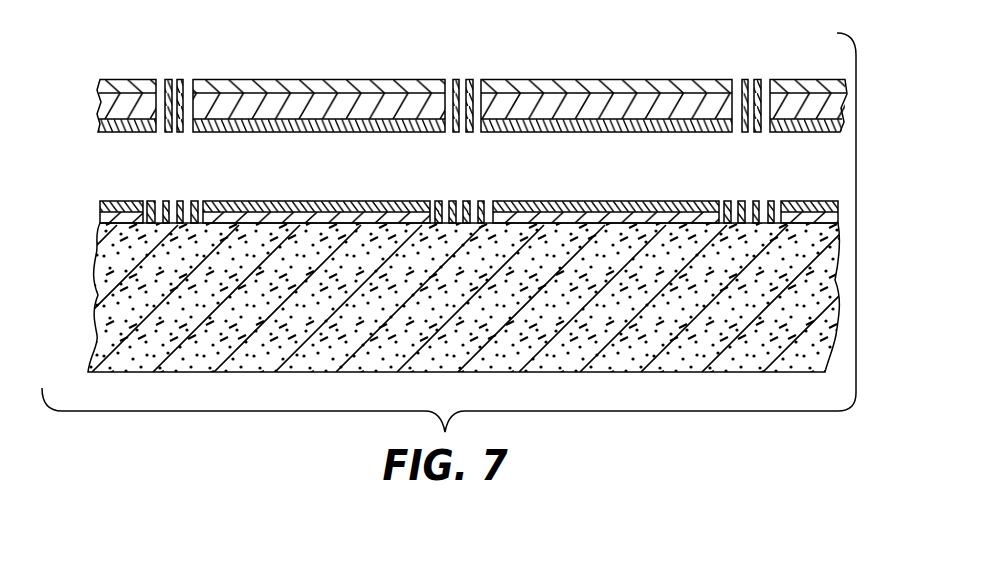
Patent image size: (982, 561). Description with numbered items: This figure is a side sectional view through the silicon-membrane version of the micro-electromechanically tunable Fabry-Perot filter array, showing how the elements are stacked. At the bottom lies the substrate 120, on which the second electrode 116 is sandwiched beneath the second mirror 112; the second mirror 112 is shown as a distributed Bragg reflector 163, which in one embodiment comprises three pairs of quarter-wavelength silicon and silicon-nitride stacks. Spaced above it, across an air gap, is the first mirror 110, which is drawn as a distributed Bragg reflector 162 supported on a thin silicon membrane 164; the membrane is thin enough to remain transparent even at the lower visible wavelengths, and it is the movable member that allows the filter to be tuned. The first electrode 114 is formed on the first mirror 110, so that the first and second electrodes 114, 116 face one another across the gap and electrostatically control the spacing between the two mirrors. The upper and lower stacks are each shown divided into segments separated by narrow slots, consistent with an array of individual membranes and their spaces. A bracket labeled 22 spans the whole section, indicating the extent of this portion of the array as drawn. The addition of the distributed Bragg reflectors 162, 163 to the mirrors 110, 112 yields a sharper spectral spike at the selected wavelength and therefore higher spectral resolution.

The flexible strip 22 is at (233, 62).
The first mirror 110 is at (624, 152).
The second mirror 112 is at (626, 183).
The first electrode 114 is at (100, 82).
The second electrode 116 is at (100, 217).
The substrate 120 is at (120, 304).
The distributed Bragg reflector 162 is at (100, 127).
The distributed Bragg reflector 163 is at (100, 207).
The silicon membrane 164 is at (106, 107).